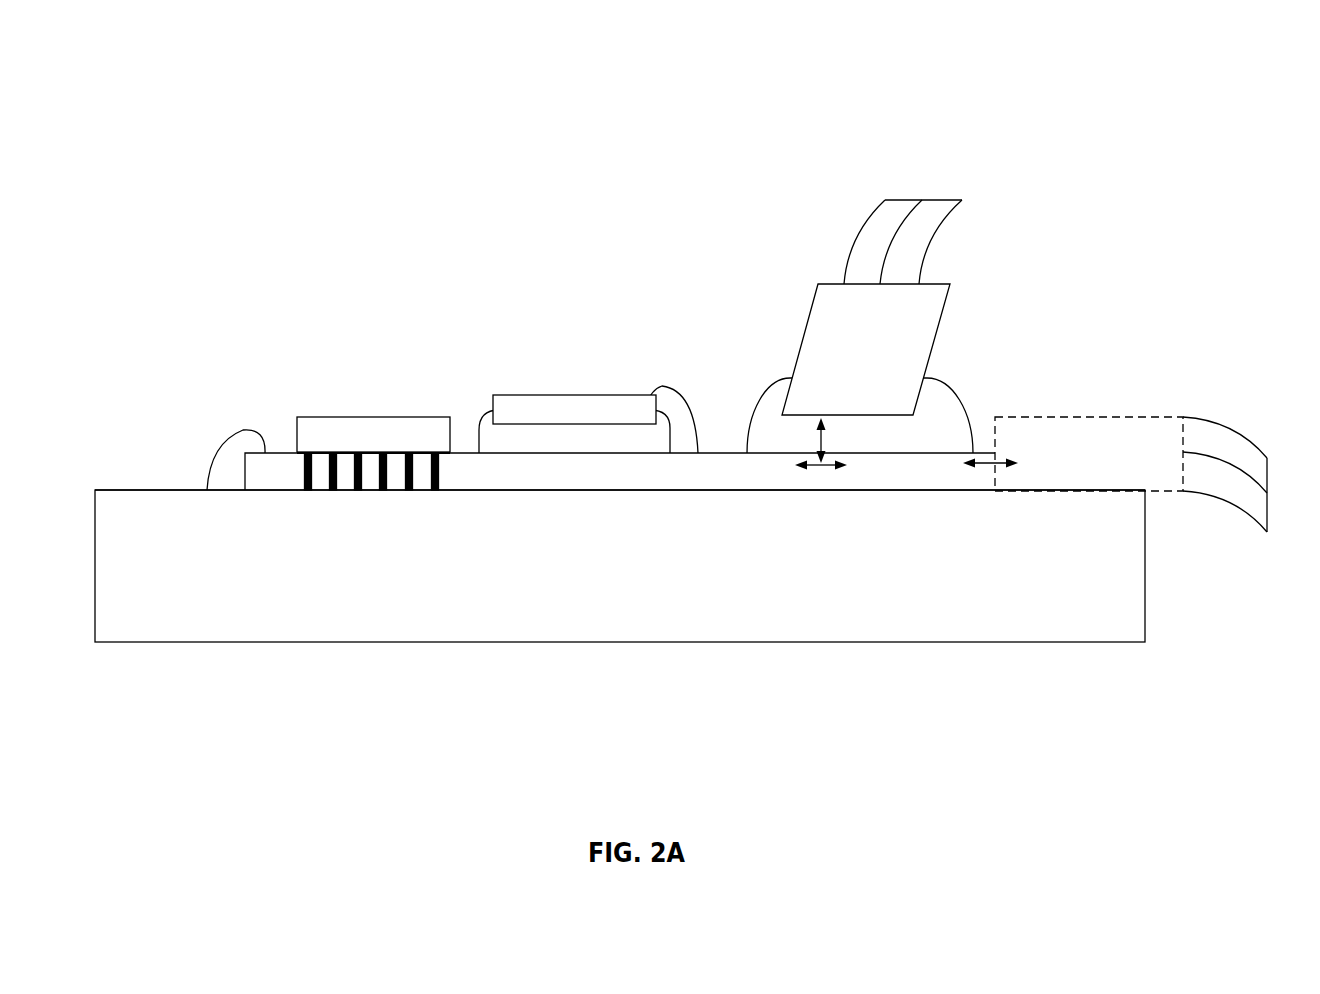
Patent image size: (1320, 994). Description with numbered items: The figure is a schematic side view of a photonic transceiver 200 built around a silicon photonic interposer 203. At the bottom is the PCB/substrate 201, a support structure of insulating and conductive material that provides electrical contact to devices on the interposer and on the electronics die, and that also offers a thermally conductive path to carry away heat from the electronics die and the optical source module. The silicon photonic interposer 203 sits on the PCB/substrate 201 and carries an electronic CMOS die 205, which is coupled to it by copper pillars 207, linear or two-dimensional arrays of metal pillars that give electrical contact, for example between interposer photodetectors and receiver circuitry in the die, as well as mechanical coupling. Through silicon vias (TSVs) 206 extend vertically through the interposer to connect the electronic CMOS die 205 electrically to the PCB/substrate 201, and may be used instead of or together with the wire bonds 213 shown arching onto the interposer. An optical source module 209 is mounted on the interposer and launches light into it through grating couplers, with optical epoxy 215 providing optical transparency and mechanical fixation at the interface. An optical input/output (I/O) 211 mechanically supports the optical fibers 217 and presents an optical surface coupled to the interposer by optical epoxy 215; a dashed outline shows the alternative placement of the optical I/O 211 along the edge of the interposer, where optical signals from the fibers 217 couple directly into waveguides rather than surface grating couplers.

The photonic transceiver 200 is at (172, 90).
The PCB/substrate 201 is at (640, 591).
The silicon photonic interposer 203 is at (760, 483).
The electronic CMOS die 205 is at (433, 445).
The through silicon vias (TSVs) 206 is at (391, 495).
The copper pillars 207 is at (291, 466).
The optical source module 209 is at (647, 418).
The optical input/output (I/O) 211 is at (1108, 481).
The wire bonds 213 is at (215, 419).
The optical epoxy 215 is at (622, 450).
The optical fibers 217 is at (1224, 416).